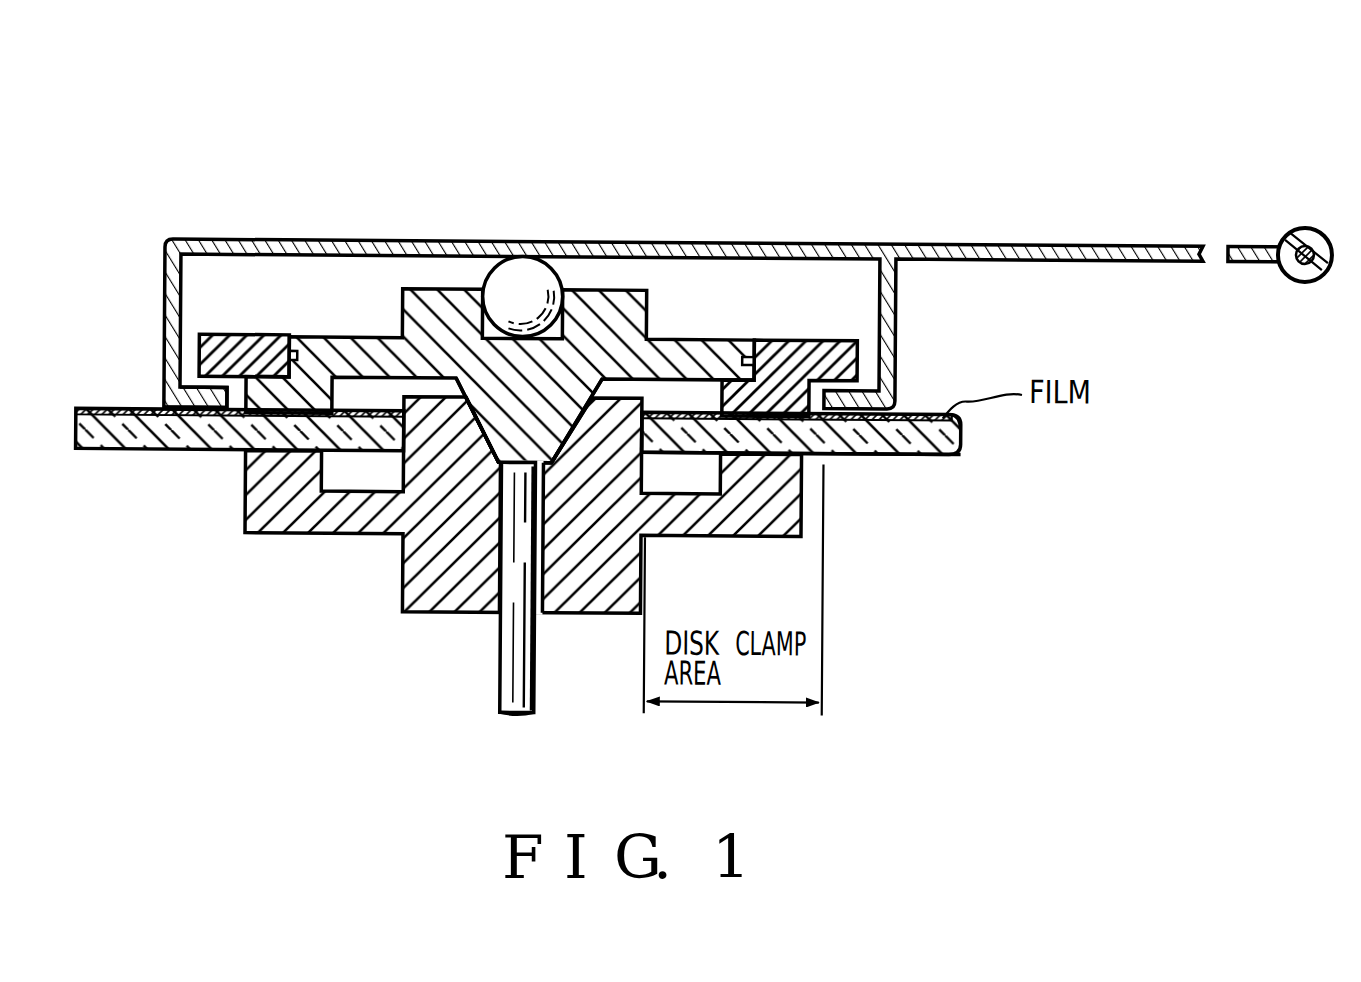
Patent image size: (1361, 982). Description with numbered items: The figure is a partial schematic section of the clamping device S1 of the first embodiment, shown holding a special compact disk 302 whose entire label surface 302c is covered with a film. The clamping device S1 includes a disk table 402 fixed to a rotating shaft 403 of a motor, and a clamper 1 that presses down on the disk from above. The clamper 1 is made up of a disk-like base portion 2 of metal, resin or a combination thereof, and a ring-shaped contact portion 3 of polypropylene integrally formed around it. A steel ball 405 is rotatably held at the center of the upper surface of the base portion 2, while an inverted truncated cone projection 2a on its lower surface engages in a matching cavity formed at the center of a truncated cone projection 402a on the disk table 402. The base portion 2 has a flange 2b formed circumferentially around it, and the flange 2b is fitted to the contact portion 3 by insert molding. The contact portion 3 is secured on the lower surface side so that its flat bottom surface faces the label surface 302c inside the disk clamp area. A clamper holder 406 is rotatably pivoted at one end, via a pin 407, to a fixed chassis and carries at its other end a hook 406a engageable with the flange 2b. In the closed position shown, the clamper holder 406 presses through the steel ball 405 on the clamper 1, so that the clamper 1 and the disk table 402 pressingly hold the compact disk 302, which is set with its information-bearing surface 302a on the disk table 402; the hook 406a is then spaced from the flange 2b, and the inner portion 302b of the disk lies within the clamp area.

The clamper 1 is at (469, 309).
The base portion 2 is at (340, 336).
The inverted truncated cone projection 2a is at (517, 438).
The flange 2b is at (296, 352).
The contact portion 3 is at (213, 352).
The steel ball 405 is at (530, 266).
The clamper holder 406 is at (731, 241).
The hook 406a is at (203, 398).
The pin 407 is at (1303, 228).
The clamping device S1 is at (840, 194).
The disk table 402 is at (273, 520).
The truncated cone projection 402a is at (444, 428).
The rotating shaft 403 is at (517, 658).
The compact disk 302 is at (935, 450).
The information-bearing surface 302a is at (905, 461).
The inner peripheral portion of disk 302b is at (641, 412).
The label surface 302c is at (937, 395).